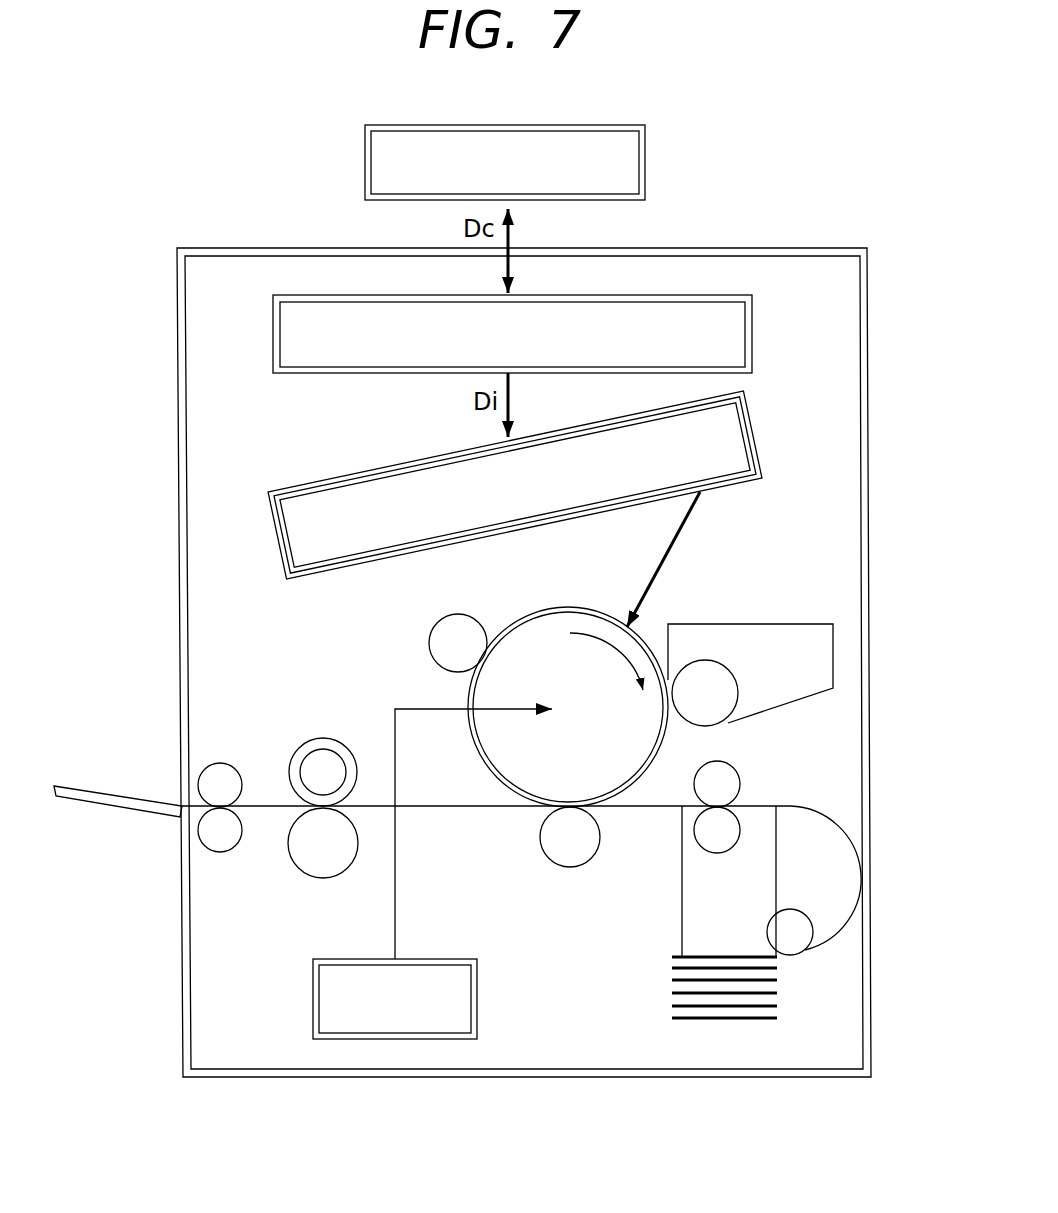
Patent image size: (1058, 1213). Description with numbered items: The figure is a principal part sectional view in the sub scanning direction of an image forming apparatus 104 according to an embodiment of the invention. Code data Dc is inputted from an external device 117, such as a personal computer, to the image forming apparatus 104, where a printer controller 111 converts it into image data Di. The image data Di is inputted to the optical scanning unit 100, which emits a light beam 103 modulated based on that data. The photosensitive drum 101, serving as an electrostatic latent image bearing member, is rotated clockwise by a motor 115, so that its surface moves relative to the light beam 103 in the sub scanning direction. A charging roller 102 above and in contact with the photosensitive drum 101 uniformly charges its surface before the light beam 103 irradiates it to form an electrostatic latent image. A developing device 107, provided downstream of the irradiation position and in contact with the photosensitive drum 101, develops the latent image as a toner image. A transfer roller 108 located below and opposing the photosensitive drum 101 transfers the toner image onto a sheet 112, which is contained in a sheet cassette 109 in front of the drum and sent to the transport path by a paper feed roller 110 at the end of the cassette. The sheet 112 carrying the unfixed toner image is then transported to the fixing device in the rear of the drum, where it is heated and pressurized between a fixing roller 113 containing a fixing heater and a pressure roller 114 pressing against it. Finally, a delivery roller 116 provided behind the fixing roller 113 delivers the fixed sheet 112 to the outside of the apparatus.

The optical scanning unit 100 is at (360, 470).
The photosensitive drum 101 is at (650, 735).
The charging roller 102 is at (455, 624).
The light beam 103 is at (672, 548).
The image forming apparatus 104 is at (818, 237).
The developing device 107 is at (833, 640).
The transfer roller 108 is at (583, 867).
The sheet cassette 109 is at (665, 992).
The paper feed roller 110 is at (787, 932).
The printer controller 111 is at (752, 330).
The sheet 112 is at (443, 807).
The fixing roller 113 is at (316, 762).
The pressure roller 114 is at (300, 853).
The motor 115 is at (313, 1000).
The delivery roller 116 is at (232, 776).
The external device 117 is at (645, 140).